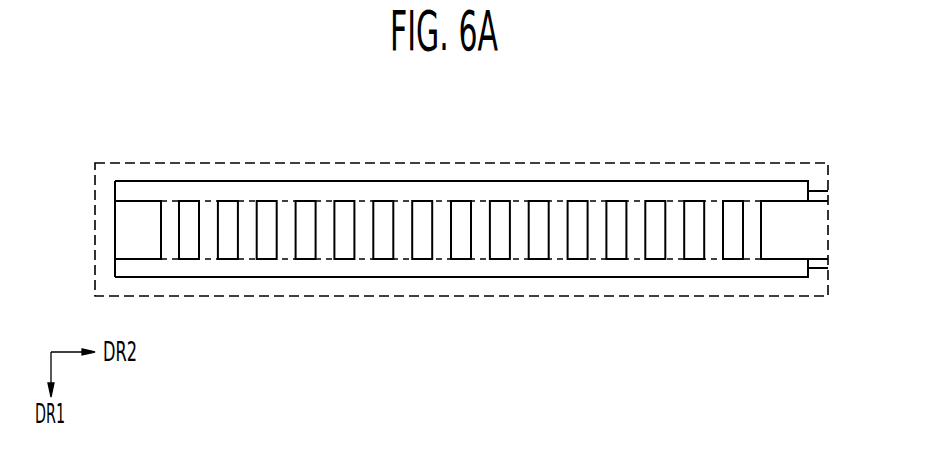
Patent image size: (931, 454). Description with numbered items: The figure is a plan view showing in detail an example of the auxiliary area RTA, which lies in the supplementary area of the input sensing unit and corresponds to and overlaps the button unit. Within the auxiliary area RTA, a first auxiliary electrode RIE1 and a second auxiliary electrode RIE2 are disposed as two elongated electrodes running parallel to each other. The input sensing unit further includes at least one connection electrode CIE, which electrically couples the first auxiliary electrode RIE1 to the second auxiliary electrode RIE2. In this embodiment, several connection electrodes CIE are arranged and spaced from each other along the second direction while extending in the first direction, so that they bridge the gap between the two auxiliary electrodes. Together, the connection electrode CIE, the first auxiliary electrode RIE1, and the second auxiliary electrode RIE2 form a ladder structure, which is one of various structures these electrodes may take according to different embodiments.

The auxiliary area RTA is at (168, 163).
The first auxiliary electrode RIE1 is at (115, 188).
The second auxiliary electrode RIE2 is at (115, 263).
The connection electrode CIE is at (761, 230).